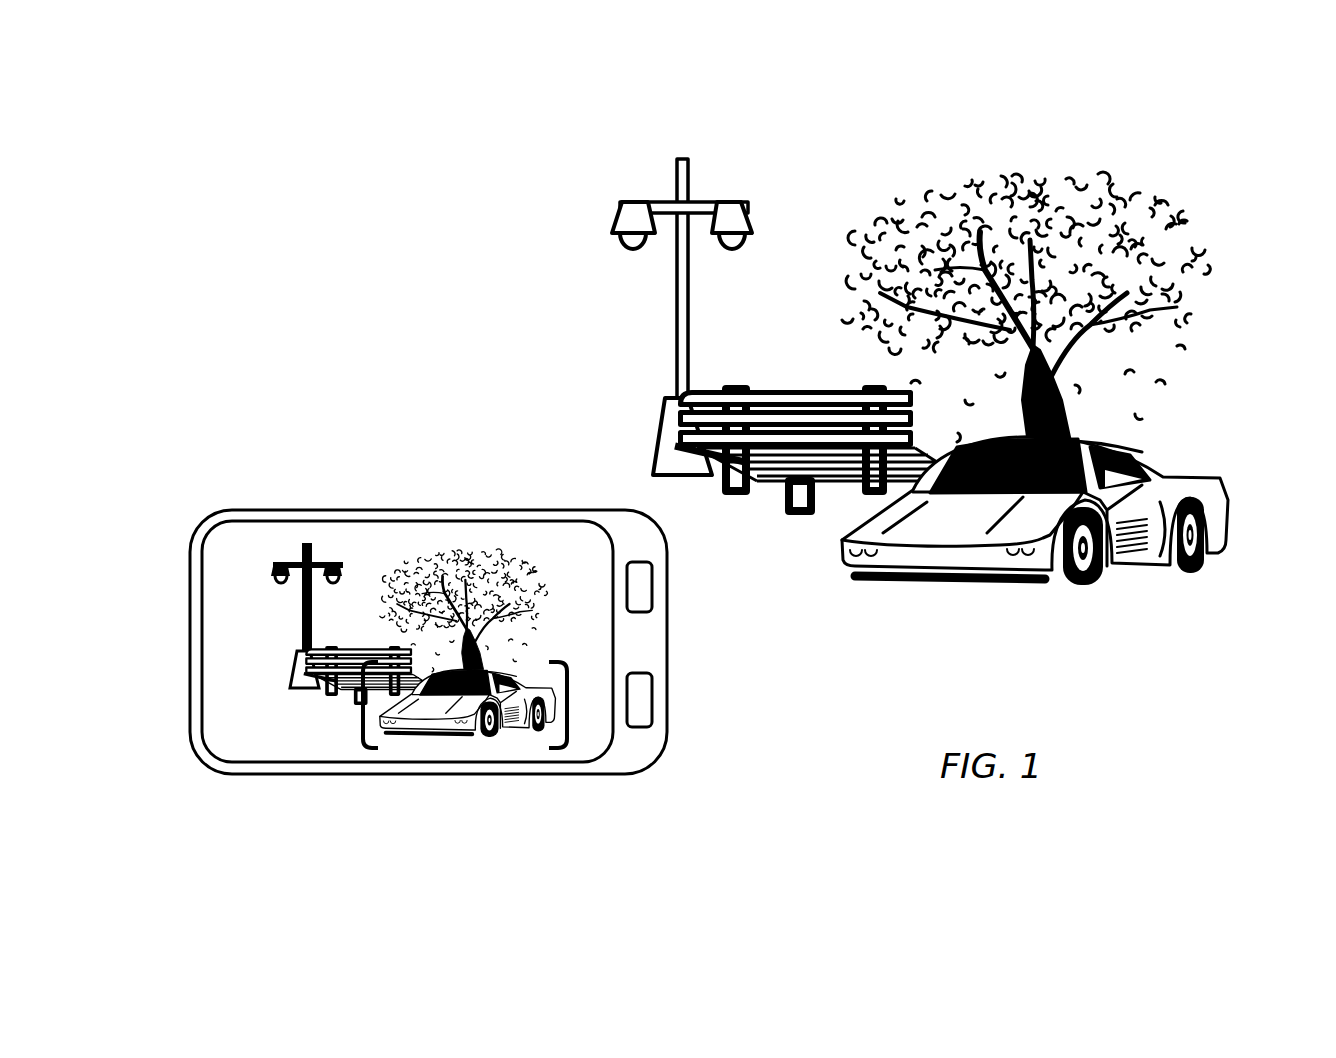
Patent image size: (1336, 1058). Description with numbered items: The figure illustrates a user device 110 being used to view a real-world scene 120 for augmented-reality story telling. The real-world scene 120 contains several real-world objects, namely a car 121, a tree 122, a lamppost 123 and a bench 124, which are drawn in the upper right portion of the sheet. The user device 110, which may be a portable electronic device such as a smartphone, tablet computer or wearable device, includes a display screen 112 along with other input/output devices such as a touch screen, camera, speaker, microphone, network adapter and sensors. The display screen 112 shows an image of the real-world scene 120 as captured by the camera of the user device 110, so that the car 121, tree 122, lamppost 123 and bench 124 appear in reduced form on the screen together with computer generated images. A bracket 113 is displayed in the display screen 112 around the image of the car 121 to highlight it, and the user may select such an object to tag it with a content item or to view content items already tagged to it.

The user device 110 is at (198, 523).
The display screen 112 is at (227, 673).
The bracket 113 is at (565, 736).
The real-world scene 120 is at (1195, 178).
The car 121 is at (1220, 482).
The tree 122 is at (1195, 284).
The lamppost 123 is at (735, 200).
The bench 124 is at (762, 387).